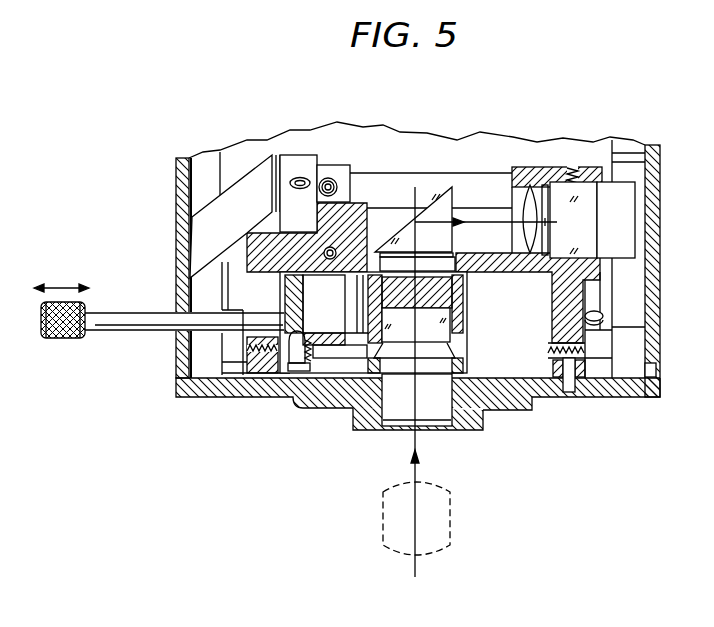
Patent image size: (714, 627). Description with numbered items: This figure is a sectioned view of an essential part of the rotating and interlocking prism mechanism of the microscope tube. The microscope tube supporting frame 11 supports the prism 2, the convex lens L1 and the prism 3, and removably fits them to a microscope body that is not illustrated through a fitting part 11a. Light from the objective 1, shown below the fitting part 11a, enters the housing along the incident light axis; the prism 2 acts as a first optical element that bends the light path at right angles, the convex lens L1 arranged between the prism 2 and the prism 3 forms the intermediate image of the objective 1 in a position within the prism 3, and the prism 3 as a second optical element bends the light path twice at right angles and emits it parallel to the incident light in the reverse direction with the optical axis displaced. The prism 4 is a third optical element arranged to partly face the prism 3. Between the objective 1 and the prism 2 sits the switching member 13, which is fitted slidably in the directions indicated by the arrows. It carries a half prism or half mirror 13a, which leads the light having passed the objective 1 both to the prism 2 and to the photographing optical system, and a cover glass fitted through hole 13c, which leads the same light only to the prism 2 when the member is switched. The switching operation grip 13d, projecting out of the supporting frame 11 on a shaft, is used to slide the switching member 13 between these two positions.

The objective 1 is at (383, 517).
The prism 2 is at (436, 250).
The prism 3 is at (583, 240).
The prism 4 is at (248, 216).
The microscope tube supporting frame 11 is at (182, 203).
The fitting part 11a is at (353, 418).
The switching member 13 is at (455, 376).
The half prism or half mirror 13a is at (434, 341).
The cover glass fitted through hole 13c is at (340, 311).
The switching operation grip 13d is at (62, 340).
The convex lens L1 is at (523, 232).